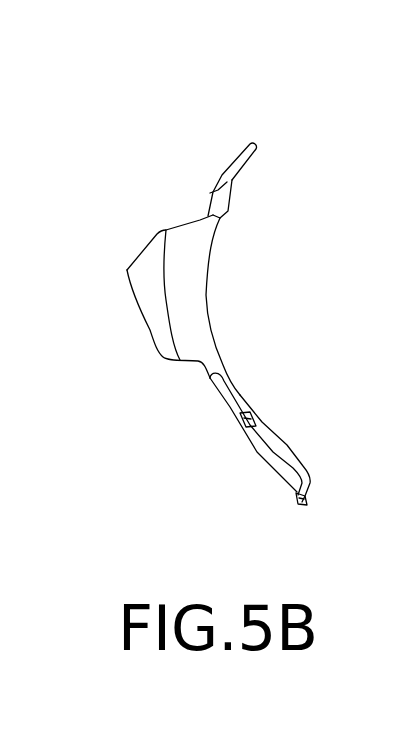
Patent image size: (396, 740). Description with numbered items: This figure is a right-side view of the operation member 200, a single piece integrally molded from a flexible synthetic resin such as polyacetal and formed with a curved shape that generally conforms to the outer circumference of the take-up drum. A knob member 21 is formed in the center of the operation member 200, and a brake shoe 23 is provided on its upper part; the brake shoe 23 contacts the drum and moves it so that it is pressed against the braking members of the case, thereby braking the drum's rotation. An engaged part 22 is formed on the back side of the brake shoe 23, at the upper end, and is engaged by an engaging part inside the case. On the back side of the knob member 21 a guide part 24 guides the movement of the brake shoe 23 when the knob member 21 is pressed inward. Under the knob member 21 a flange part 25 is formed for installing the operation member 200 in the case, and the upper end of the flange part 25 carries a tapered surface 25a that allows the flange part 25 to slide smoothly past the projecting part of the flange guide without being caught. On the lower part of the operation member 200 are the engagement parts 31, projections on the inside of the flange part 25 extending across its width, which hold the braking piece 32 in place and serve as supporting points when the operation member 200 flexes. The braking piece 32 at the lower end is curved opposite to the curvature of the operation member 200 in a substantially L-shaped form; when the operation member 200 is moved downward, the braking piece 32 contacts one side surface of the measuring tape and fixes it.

The operation member 200 is at (259, 82).
The knob member 21 is at (150, 295).
The engaged part 22 is at (213, 193).
The brake shoe 23 is at (225, 200).
The guide part 24 is at (196, 303).
The flange part 25 is at (222, 403).
The tapered surface 25a is at (214, 376).
The engagement parts 31 is at (258, 425).
The braking piece 32 is at (308, 504).